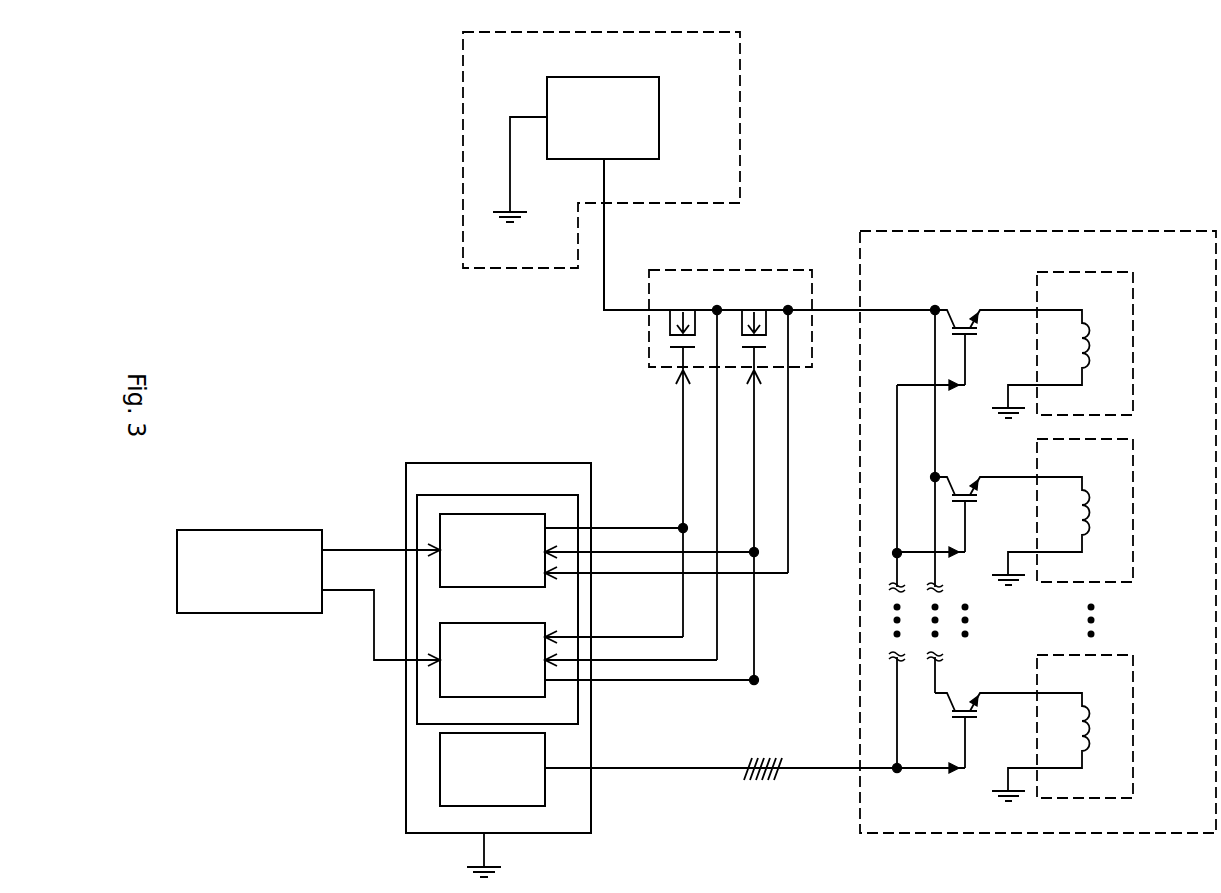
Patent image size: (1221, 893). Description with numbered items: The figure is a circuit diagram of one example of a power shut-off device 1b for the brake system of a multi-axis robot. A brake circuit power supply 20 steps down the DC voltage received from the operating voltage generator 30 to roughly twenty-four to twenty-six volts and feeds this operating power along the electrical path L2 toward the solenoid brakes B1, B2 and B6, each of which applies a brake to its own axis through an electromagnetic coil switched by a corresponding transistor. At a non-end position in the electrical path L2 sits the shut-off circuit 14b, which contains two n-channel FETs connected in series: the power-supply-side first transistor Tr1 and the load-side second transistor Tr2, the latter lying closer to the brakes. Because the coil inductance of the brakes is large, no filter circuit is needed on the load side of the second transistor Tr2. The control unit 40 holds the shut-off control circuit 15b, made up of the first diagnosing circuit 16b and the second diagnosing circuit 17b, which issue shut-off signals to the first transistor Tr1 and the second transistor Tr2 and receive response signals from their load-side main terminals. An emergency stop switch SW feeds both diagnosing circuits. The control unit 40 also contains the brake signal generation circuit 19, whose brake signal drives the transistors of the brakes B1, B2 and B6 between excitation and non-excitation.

The power shut-off device 1b is at (1044, 146).
The brake circuit power supply 20 is at (625, 77).
The operating voltage generator 30 is at (741, 100).
The control unit 40 is at (488, 463).
The shut-off circuit 14b is at (730, 454).
The electrical path L2 is at (605, 240).
The emergency stop switch SW is at (290, 530).
The shut-off control circuit 15b is at (503, 495).
The first diagnosing circuit 16b is at (505, 588).
The second diagnosing circuit 17b is at (505, 697).
The brake signal generation circuit 19 is at (512, 806).
The first transistor Tr1 is at (680, 460).
The second transistor Tr2 is at (752, 484).
The solenoid brake B1 is at (1136, 318).
The solenoid brake B2 is at (1136, 485).
The solenoid brake B6 is at (1136, 701).